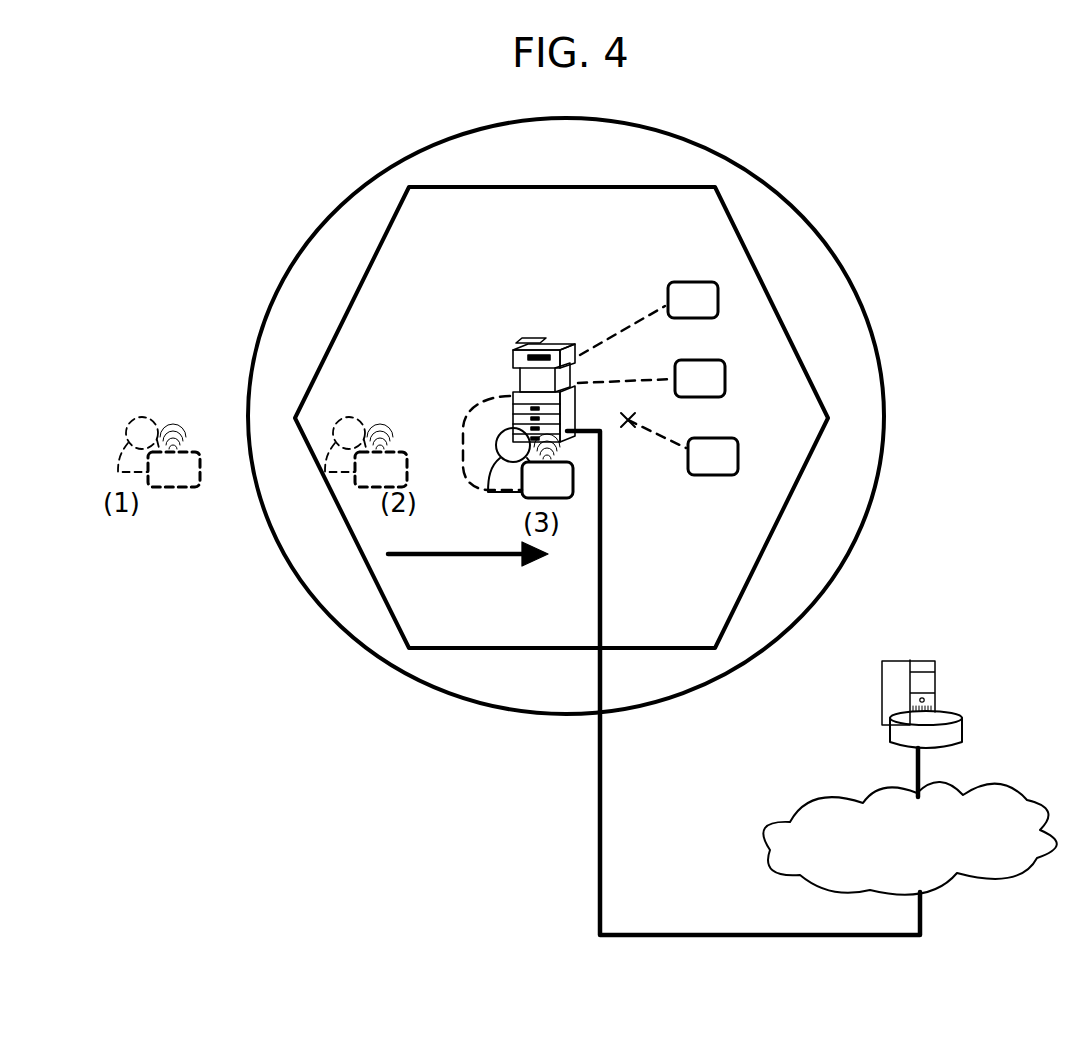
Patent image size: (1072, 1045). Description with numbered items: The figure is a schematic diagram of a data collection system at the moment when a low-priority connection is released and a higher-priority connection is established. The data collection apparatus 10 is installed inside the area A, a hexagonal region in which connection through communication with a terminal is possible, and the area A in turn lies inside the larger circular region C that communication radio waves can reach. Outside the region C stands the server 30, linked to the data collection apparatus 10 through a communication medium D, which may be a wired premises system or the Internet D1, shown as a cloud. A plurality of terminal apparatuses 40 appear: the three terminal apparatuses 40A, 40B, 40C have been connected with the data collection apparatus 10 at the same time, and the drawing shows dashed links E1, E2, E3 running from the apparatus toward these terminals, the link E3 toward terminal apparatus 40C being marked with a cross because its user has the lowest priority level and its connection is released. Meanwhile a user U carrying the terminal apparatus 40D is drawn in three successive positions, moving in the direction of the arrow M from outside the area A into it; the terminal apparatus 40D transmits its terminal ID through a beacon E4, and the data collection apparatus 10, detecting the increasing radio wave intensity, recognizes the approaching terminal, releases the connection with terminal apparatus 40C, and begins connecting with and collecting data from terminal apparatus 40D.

The data collection apparatus 10 is at (547, 349).
The server 30 is at (921, 660).
The terminal apparatuses 40 is at (836, 350).
The terminal apparatus 40A is at (718, 295).
The terminal apparatus 40B is at (725, 372).
The terminal apparatus 40C is at (738, 453).
The terminal apparatus 40D is at (193, 450).
The user U is at (140, 418).
The area A is at (737, 228).
The region C is at (747, 170).
The communication medium D is at (603, 860).
The Internet D1 is at (823, 792).
The connection to terminal A E1 is at (643, 318).
The connection to terminal B E2 is at (613, 380).
The disconnected connection to terminal C E3 is at (663, 440).
The beacon E4 is at (503, 400).
The arrow M is at (452, 556).